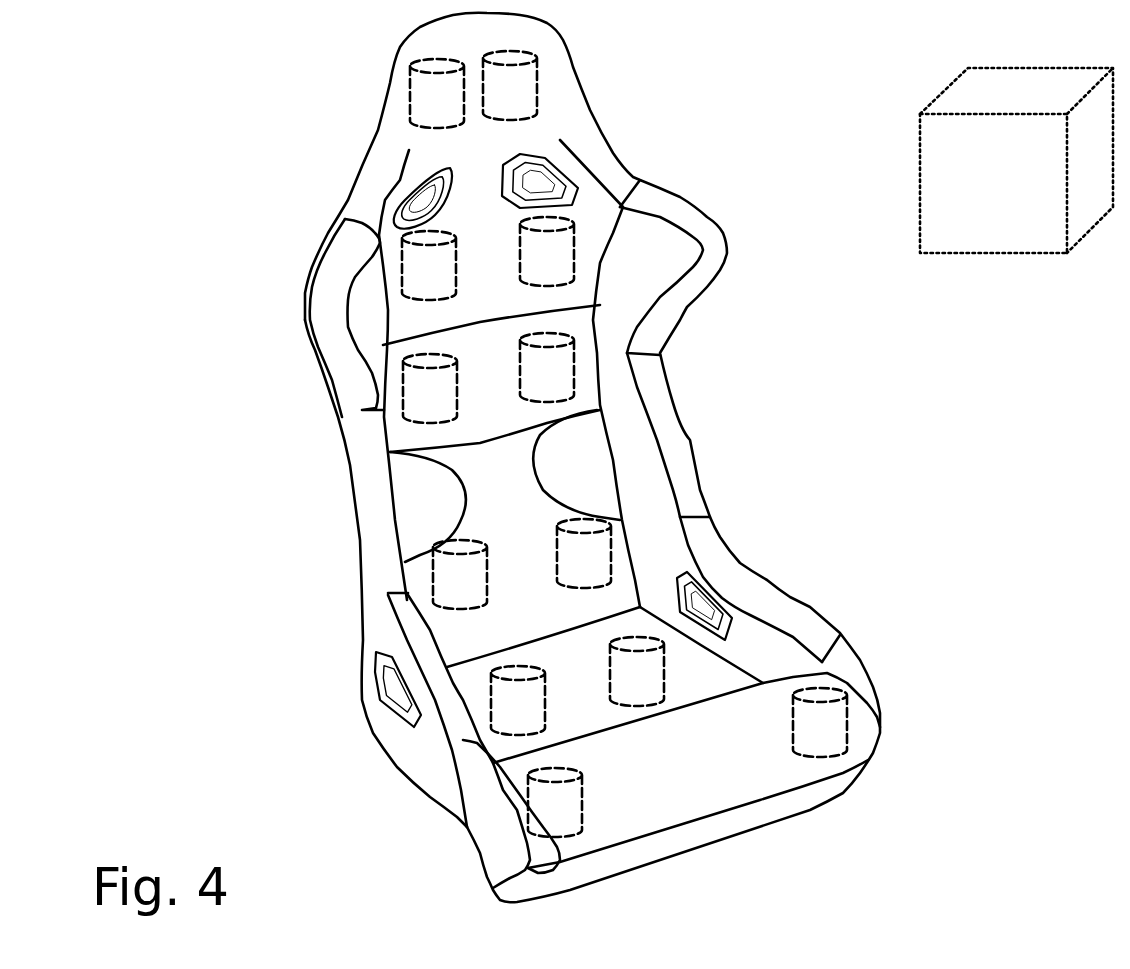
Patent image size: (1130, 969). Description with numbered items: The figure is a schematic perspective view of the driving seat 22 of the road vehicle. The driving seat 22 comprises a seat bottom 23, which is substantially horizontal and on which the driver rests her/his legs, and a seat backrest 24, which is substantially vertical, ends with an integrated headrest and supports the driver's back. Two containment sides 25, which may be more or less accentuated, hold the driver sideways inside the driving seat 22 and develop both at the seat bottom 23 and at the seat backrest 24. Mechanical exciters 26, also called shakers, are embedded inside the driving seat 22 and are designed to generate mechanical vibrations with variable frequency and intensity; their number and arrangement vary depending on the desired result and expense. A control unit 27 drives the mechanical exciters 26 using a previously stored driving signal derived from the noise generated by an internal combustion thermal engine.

The driving seat 22 is at (898, 430).
The seat bottom 23 is at (597, 713).
The seat backrest 24 is at (480, 303).
The containment side 25 is at (632, 475).
The mechanical exciter 26 is at (435, 97).
The control unit 27 is at (1016, 160).